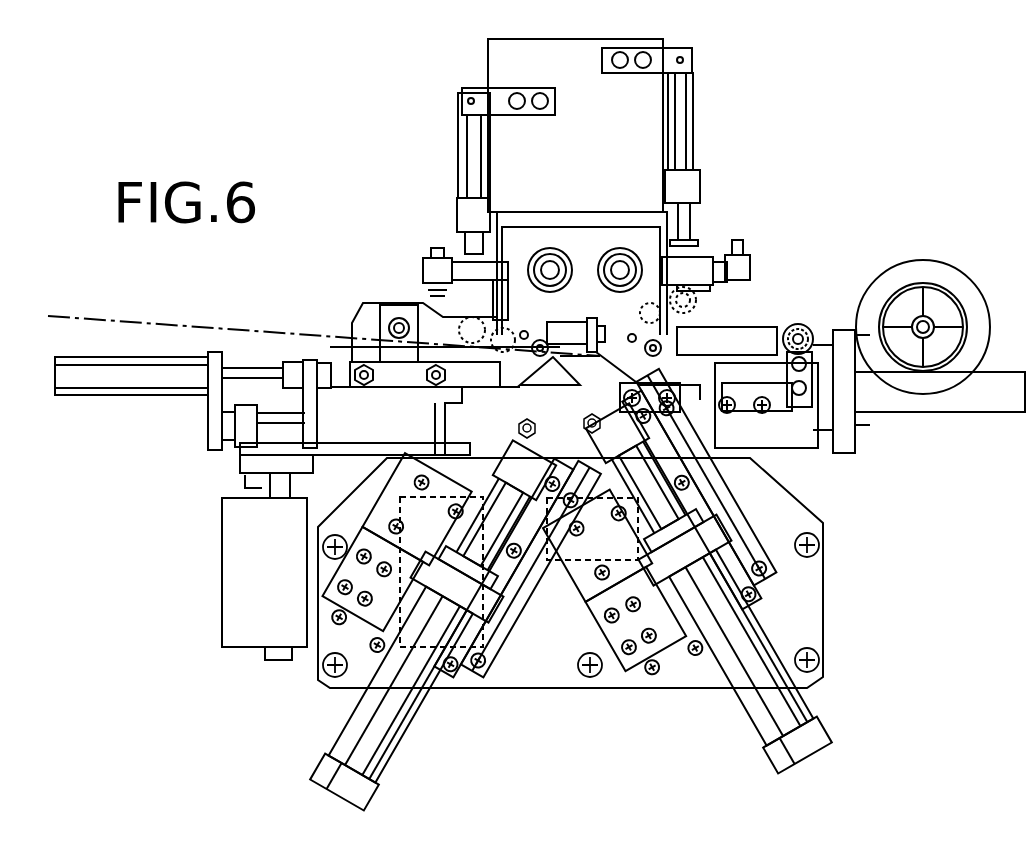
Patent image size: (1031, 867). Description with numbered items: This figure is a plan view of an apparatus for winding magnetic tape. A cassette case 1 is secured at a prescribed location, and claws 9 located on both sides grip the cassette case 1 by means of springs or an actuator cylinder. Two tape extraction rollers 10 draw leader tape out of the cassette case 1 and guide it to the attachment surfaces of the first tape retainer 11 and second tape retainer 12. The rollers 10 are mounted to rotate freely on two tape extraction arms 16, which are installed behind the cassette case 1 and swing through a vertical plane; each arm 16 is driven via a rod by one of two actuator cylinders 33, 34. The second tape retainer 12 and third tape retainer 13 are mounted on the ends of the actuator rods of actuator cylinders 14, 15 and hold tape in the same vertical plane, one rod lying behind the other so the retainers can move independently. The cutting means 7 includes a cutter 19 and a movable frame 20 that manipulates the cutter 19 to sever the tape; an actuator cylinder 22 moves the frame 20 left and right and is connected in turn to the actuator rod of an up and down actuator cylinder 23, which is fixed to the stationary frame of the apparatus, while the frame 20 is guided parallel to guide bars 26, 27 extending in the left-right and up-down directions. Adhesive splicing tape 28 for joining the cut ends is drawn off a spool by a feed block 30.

The cassette case 1 is at (537, 230).
The cutting means 7 is at (345, 322).
The claws 9 is at (452, 260).
The tape extraction rollers 10 is at (655, 260).
The first tape retainer 11 is at (719, 400).
The second tape retainer 12 is at (550, 328).
The third tape retainer 13 is at (572, 378).
The actuator cylinder 14 is at (752, 727).
The actuator cylinder 15 is at (398, 738).
The tape extraction arms 16 is at (399, 316).
The cutter 19 is at (588, 320).
The movable frame 20 is at (490, 378).
The actuator cylinder 22 is at (150, 395).
The actuator cylinder 23 is at (318, 602).
The guide bar 26 is at (262, 425).
The guide bar 27 is at (268, 488).
The adhesive splicing tape 28 is at (818, 335).
The feed block 30 is at (798, 324).
The actuator cylinder 33 is at (700, 97).
The actuator cylinder 34 is at (462, 122).